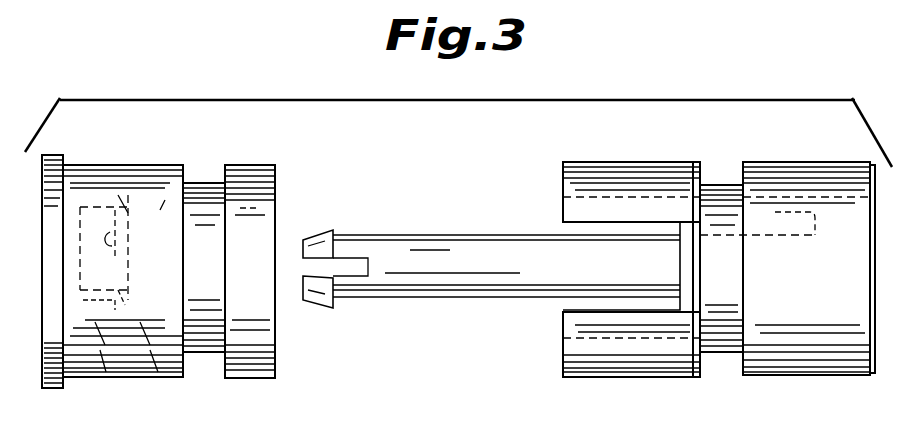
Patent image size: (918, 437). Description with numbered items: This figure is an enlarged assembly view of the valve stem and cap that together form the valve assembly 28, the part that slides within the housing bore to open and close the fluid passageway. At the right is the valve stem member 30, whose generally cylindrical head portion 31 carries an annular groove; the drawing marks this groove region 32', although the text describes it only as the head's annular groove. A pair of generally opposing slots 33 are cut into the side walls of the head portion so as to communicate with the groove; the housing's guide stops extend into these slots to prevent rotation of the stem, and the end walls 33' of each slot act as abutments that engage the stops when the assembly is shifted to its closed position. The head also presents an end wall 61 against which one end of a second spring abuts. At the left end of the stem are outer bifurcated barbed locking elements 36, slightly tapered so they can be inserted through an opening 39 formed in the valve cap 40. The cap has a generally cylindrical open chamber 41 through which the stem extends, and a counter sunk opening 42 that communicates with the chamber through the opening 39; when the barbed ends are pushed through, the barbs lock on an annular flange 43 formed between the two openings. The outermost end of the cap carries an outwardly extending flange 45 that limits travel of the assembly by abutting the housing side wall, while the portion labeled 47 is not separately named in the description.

The valve assembly 28 is at (423, 313).
The valve stem member 30 is at (462, 210).
The head portion 31 is at (843, 186).
The hub neck 32' is at (745, 307).
The slots 33 is at (592, 269).
The end walls of slots 33' is at (629, 267).
The bifurcated barbed locking elements 36 is at (328, 268).
The opening 39 is at (171, 383).
The valve cap 40 is at (153, 123).
The open chamber 41 is at (258, 208).
The counter sunk opening 42 is at (109, 340).
The annular flange 43 is at (120, 210).
The outwardly extending flange 45 is at (43, 348).
The outer flange 47 is at (175, 160).
The end wall 61 is at (790, 168).